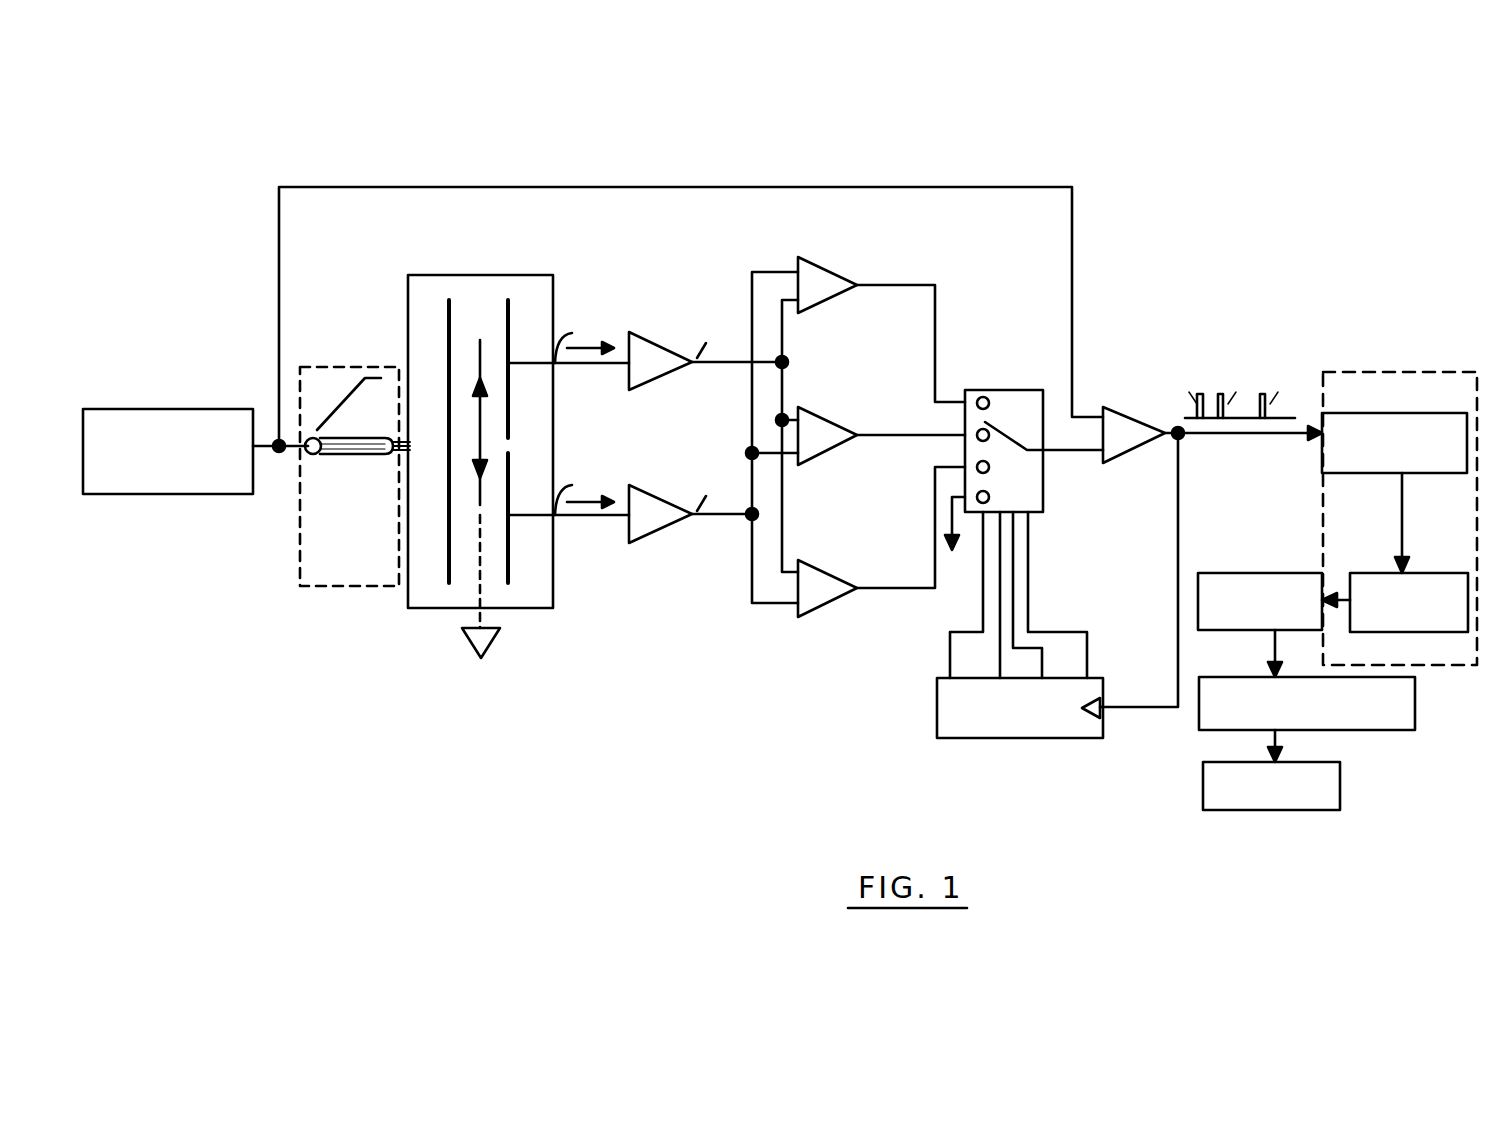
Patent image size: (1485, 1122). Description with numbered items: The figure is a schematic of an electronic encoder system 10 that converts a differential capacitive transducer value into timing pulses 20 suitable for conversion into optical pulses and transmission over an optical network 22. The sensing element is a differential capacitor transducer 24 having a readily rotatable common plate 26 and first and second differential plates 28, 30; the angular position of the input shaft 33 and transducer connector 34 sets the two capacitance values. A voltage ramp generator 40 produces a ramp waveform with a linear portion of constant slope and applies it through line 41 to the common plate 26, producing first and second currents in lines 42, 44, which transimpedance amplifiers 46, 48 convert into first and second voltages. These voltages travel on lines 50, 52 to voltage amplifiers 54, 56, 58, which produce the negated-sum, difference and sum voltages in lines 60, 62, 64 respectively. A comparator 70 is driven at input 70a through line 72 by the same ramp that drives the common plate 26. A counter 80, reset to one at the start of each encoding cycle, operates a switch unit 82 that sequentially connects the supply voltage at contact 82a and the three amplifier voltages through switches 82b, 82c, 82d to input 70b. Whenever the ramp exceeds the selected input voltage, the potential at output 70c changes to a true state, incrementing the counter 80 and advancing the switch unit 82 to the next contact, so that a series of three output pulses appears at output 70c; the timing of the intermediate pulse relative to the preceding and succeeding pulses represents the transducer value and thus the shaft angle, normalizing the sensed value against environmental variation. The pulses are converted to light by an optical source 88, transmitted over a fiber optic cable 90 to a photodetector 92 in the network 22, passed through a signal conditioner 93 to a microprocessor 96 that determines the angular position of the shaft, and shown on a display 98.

The electronic encoder system 10 is at (1146, 216).
The timing pulses 20 is at (1207, 417).
The optical network 22 is at (1373, 370).
The differential capacitor transducer 24 is at (515, 273).
The common plate 26 is at (448, 347).
The first differential plate 28 is at (512, 330).
The second differential plate 30 is at (512, 547).
The input shaft 33 is at (357, 458).
The transducer connector 34 is at (413, 453).
The voltage ramp generator 40 is at (170, 495).
The line 41 is at (262, 448).
The line 42 is at (603, 370).
The line 44 is at (590, 518).
The transimpedance amplifier 46 is at (660, 343).
The transimpedance amplifier 48 is at (652, 497).
The line 50 is at (710, 362).
The line 52 is at (710, 514).
The voltage amplifier 54 is at (833, 267).
The voltage amplifier 56 is at (823, 450).
The voltage amplifier 58 is at (827, 605).
The line 60 is at (937, 333).
The line 62 is at (877, 435).
The line 64 is at (933, 520).
The comparator 70 is at (1130, 413).
The comparator input 70a is at (1102, 410).
The comparator input 70b is at (1100, 458).
The comparator output 70c is at (1178, 433).
The line 72 is at (685, 183).
The counter 80 is at (935, 707).
The switch unit 82 is at (1036, 534).
The contact 82a is at (989, 500).
The switch 82b is at (989, 470).
The switch 82c is at (995, 446).
The switch 82d is at (997, 405).
The optical source 88 is at (1370, 473).
The fiber optic cable 90 is at (1402, 523).
The photodetector 92 is at (1423, 633).
The signal conditioner 93 is at (1245, 572).
The microprocessor 96 is at (1373, 730).
The display 98 is at (1310, 810).